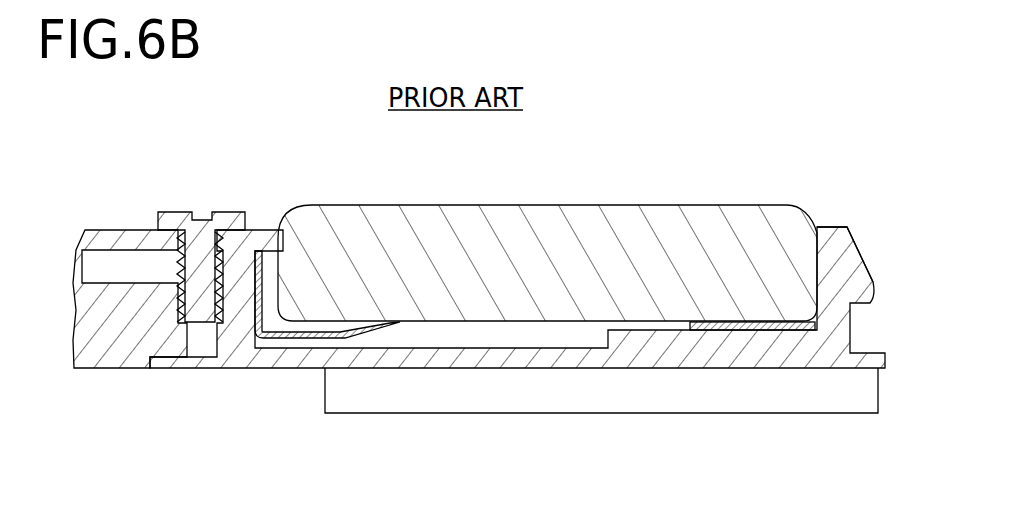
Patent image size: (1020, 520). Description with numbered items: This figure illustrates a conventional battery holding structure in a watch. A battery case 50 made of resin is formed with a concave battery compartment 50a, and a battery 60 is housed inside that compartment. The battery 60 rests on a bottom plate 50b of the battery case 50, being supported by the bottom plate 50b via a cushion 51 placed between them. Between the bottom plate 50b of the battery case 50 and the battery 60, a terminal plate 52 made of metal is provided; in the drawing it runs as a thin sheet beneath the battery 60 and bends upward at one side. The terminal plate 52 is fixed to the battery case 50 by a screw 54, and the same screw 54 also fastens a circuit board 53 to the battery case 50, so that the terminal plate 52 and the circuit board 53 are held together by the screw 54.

The battery case 50 is at (853, 254).
The battery compartment 50a is at (735, 183).
The bottom plate 50b is at (717, 370).
The cushion 51 is at (758, 330).
The terminal plate 52 is at (303, 338).
The circuit board 53 is at (132, 230).
The screw 54 is at (187, 212).
The battery 60 is at (568, 206).